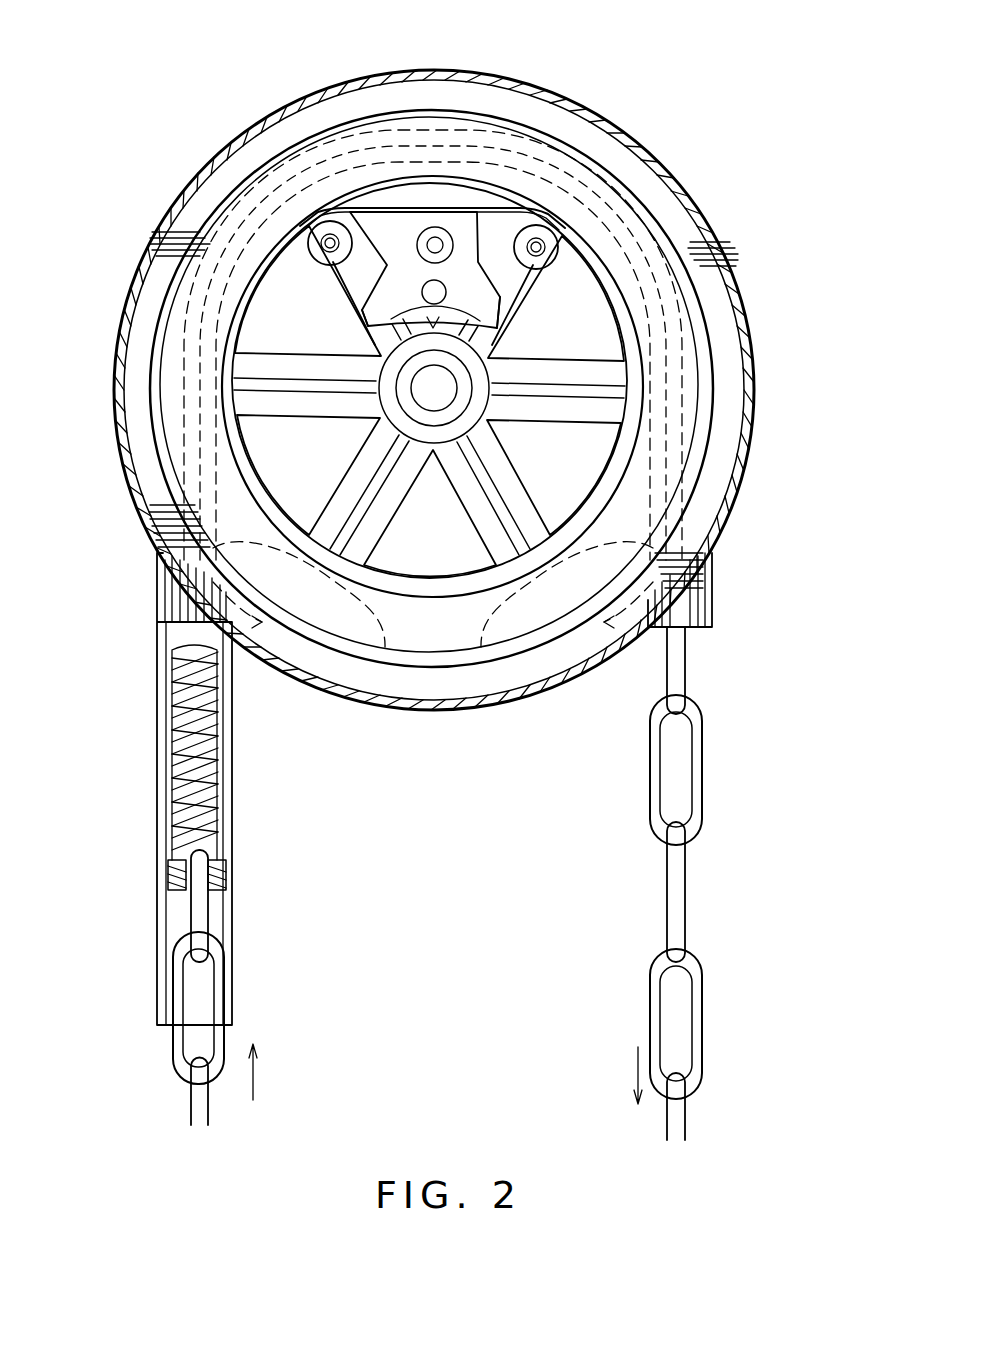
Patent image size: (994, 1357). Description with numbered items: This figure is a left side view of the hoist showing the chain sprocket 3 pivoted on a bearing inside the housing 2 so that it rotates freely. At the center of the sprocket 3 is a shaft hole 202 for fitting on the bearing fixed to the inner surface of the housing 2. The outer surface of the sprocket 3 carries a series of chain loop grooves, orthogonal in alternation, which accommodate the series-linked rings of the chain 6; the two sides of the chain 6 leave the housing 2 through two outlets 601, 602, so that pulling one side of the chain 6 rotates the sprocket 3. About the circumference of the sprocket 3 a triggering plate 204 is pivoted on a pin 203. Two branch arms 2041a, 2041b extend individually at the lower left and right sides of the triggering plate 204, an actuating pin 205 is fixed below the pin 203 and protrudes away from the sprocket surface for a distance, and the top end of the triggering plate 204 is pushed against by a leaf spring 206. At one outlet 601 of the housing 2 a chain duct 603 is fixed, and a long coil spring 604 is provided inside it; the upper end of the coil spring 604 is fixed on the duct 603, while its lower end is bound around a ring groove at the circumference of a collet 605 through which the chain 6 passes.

The housing 2 is at (612, 115).
The chain sprocket 3 is at (518, 135).
The shaft hole 202 is at (440, 390).
The pin 203 is at (393, 208).
The triggering plate 204 is at (400, 228).
The actuating pin 205 is at (447, 296).
The leaf spring 206 is at (435, 245).
The branch arm 2041a is at (365, 323).
The branch arm 2041b is at (497, 326).
The chain 6 is at (712, 1000).
The outlet 601 is at (156, 592).
The outlet 602 is at (713, 606).
The chain duct 603 is at (158, 828).
The coil spring 604 is at (158, 740).
The collet 605 is at (235, 878).